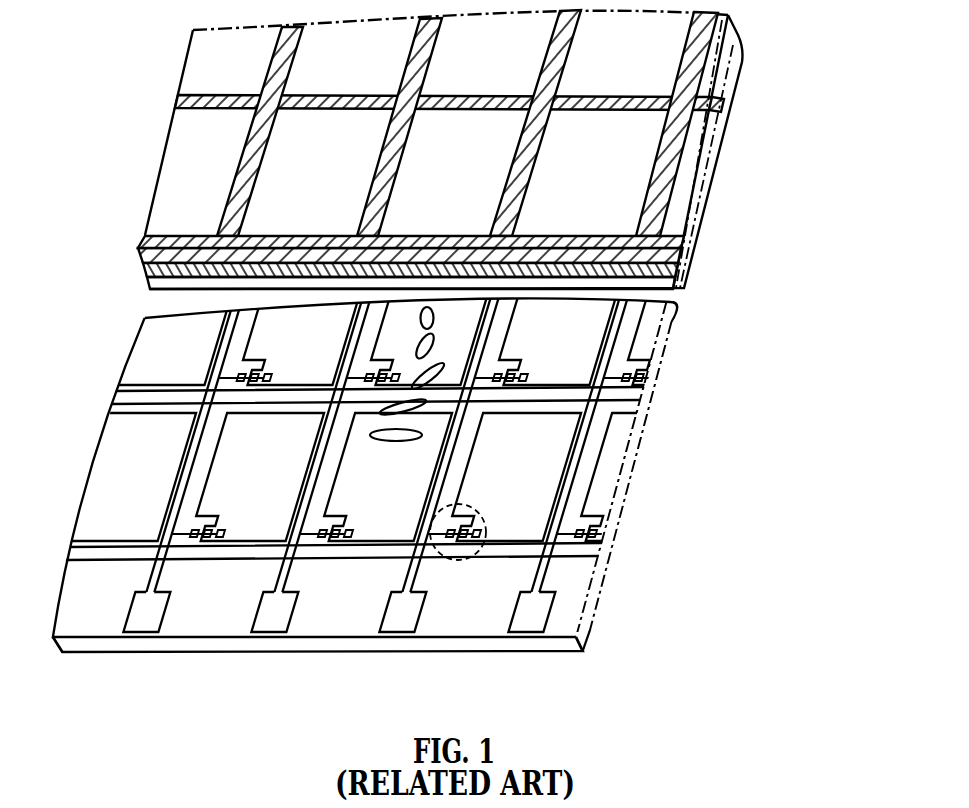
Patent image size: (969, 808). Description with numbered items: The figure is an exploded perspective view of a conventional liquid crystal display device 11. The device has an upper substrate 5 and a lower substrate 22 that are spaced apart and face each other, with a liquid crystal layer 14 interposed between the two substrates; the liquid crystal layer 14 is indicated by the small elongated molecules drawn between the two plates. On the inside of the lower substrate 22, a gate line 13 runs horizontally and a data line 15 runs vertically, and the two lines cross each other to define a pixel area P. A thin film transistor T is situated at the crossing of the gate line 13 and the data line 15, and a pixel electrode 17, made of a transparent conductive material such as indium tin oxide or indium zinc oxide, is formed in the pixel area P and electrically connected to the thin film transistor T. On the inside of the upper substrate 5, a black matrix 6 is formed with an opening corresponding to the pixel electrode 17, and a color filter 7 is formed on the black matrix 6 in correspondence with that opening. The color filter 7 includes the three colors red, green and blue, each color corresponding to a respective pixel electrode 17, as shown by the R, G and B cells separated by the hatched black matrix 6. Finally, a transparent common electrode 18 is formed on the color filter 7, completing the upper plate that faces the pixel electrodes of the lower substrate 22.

The upper substrate 5 is at (140, 253).
The black matrix 6 is at (713, 108).
The color filter 7 is at (673, 62).
The common electrode 18 is at (680, 286).
The liquid crystal display device 11 is at (451, 366).
The lower substrate 22 is at (545, 645).
The gate line 13 is at (574, 555).
The data line 15 is at (407, 585).
The pixel electrode 17 is at (557, 510).
The liquid crystal layer 14 is at (405, 387).
The thin film transistor T is at (470, 558).
The pixel area P is at (600, 458).